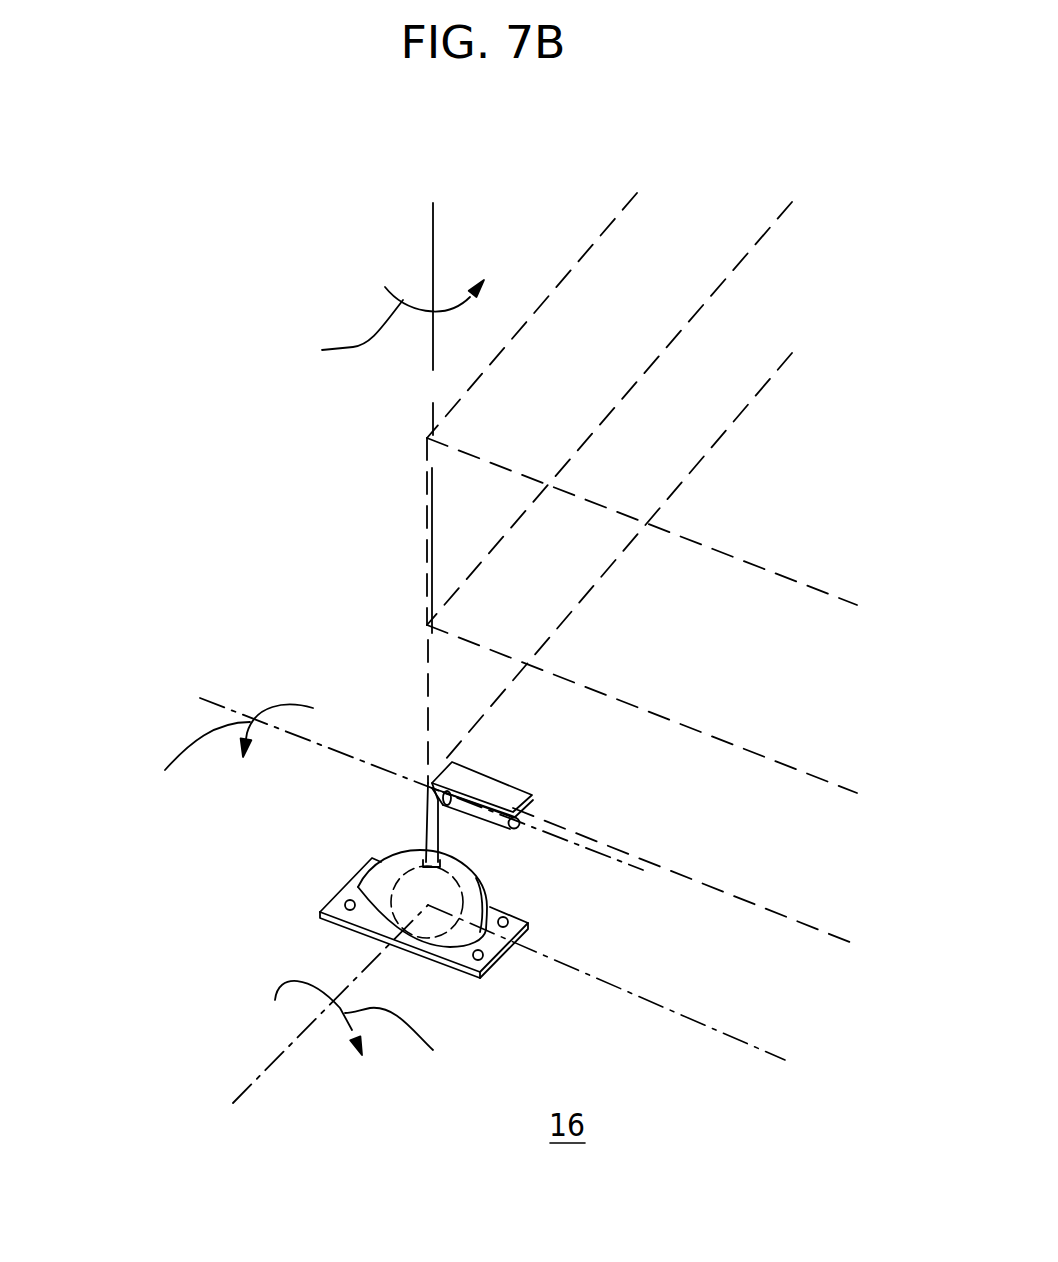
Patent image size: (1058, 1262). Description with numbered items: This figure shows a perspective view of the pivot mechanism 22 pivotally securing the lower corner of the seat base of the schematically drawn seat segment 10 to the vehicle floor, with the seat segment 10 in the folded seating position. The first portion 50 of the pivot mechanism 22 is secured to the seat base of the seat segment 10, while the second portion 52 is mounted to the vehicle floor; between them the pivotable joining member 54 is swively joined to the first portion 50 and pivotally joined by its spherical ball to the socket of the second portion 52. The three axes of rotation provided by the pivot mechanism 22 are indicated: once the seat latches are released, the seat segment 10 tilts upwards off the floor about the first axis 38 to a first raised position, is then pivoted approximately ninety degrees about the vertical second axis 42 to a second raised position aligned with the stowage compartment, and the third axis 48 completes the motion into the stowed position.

The seat segment 10 is at (865, 505).
The pivot mechanism 22 is at (262, 927).
The first axis 38 is at (222, 707).
The second axis 42 is at (433, 240).
The third axis 48 is at (245, 1090).
The first portion 50 is at (491, 815).
The second portion 52 is at (488, 881).
The pivotable joining member 54 is at (428, 822).